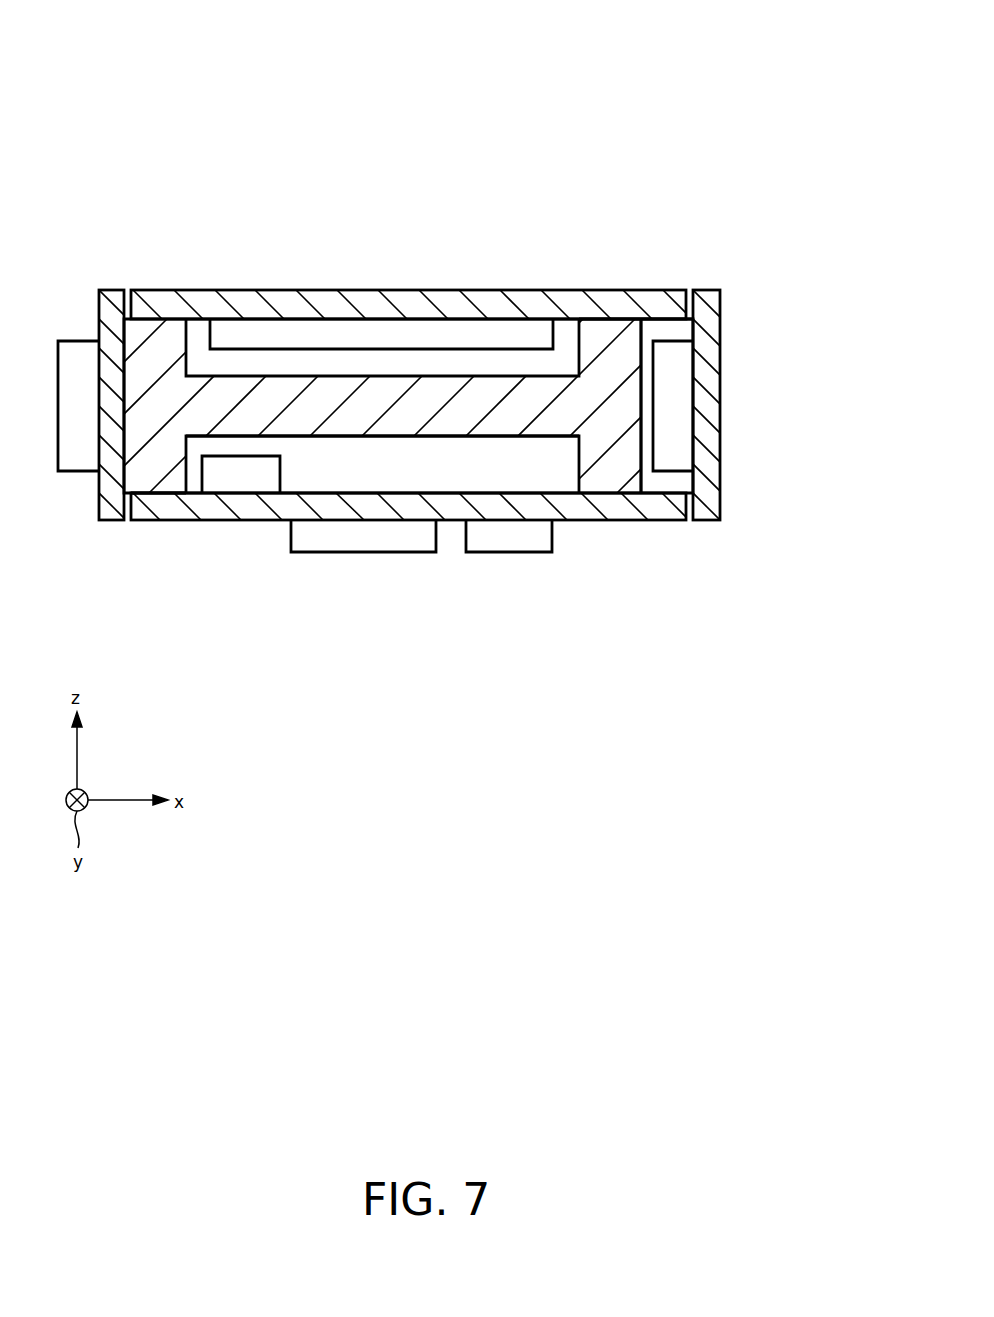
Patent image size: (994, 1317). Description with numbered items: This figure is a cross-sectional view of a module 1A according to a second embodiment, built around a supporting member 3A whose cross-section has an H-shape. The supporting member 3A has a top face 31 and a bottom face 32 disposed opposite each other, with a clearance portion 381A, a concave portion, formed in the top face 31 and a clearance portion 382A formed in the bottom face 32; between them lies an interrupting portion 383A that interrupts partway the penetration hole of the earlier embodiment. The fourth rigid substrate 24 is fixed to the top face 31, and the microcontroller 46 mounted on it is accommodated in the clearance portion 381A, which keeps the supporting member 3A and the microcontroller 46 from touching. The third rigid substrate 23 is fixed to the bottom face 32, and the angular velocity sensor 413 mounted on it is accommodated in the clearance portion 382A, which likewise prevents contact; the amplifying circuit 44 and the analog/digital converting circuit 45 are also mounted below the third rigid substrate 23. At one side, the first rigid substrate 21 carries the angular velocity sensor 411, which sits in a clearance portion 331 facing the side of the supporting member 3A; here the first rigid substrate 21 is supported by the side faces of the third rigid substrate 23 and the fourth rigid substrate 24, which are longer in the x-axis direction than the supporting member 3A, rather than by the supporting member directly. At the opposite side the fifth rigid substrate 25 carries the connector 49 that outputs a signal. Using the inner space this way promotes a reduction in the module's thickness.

The module 1A is at (622, 118).
The first rigid substrate 21 is at (717, 378).
The third rigid substrate 23 is at (620, 512).
The fourth rigid substrate 24 is at (369, 308).
The fifth rigid substrate 25 is at (112, 310).
The top face 31 is at (623, 318).
The bottom face 32 is at (160, 497).
The clearance portion 331 is at (642, 385).
The supporting member 3A is at (342, 438).
The clearance portion 381A is at (496, 373).
The clearance portion 382A is at (452, 440).
The interrupting portion 383A is at (291, 390).
The angular velocity sensor 411 is at (682, 444).
The angular velocity sensor 413 is at (227, 477).
The amplifying circuit 44 is at (522, 537).
The analog/digital converting circuit 45 is at (383, 537).
The microcontroller 46 is at (425, 328).
The connector 49 is at (73, 448).